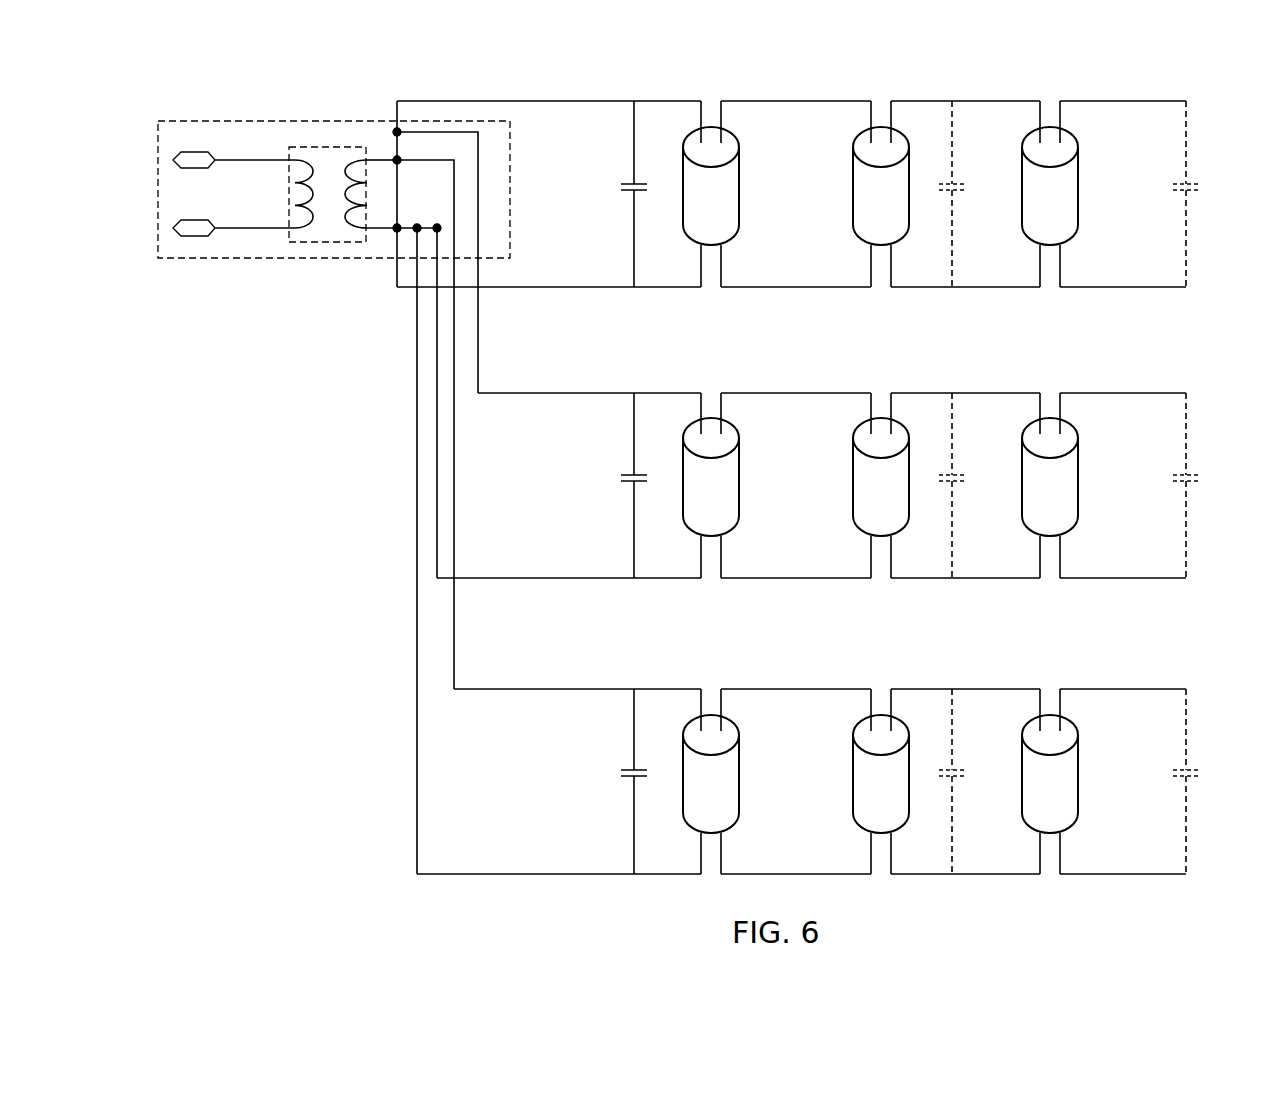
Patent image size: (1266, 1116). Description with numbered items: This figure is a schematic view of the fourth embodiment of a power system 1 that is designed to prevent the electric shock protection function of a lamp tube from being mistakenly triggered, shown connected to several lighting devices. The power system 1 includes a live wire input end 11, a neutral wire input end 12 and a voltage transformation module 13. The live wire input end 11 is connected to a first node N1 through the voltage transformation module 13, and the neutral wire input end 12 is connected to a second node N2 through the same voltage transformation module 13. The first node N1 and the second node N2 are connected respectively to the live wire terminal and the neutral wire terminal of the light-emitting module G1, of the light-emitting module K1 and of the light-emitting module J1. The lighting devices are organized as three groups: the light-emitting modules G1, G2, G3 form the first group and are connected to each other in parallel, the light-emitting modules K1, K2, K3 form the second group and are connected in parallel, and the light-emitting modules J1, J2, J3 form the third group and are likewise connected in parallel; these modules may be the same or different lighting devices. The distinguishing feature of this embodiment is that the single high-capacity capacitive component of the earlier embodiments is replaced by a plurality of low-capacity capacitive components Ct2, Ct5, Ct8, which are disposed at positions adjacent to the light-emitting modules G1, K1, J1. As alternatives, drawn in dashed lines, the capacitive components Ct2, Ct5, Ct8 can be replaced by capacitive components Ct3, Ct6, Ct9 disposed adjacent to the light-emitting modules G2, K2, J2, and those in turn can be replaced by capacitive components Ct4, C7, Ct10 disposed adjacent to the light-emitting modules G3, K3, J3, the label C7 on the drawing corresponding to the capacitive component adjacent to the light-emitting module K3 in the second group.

The power system 1 is at (268, 112).
The live wire input end 11 is at (192, 168).
The neutral wire input end 12 is at (204, 220).
The voltage transformation module 13 is at (331, 243).
The first node N1 is at (384, 146).
The second node N2 is at (404, 241).
The capacitive component Ct2 is at (615, 194).
The capacitive component Ct3 is at (973, 194).
The capacitive component Ct4 is at (1205, 194).
The capacitive component Ct5 is at (614, 485).
The capacitive component Ct6 is at (973, 485).
The capacitor C7 is at (1201, 485).
The capacitive component Ct8 is at (614, 781).
The capacitive component Ct9 is at (973, 781).
The capacitive component Ct10 is at (1211, 781).
The light-emitting module G1 is at (724, 184).
The light-emitting module G2 is at (866, 183).
The light-emitting module G3 is at (1066, 181).
The light-emitting module K1 is at (724, 483).
The light-emitting module K2 is at (866, 483).
The light-emitting module K3 is at (1066, 478).
The light-emitting module J1 is at (726, 775).
The light-emitting module J2 is at (868, 776).
The light-emitting module J3 is at (1066, 772).